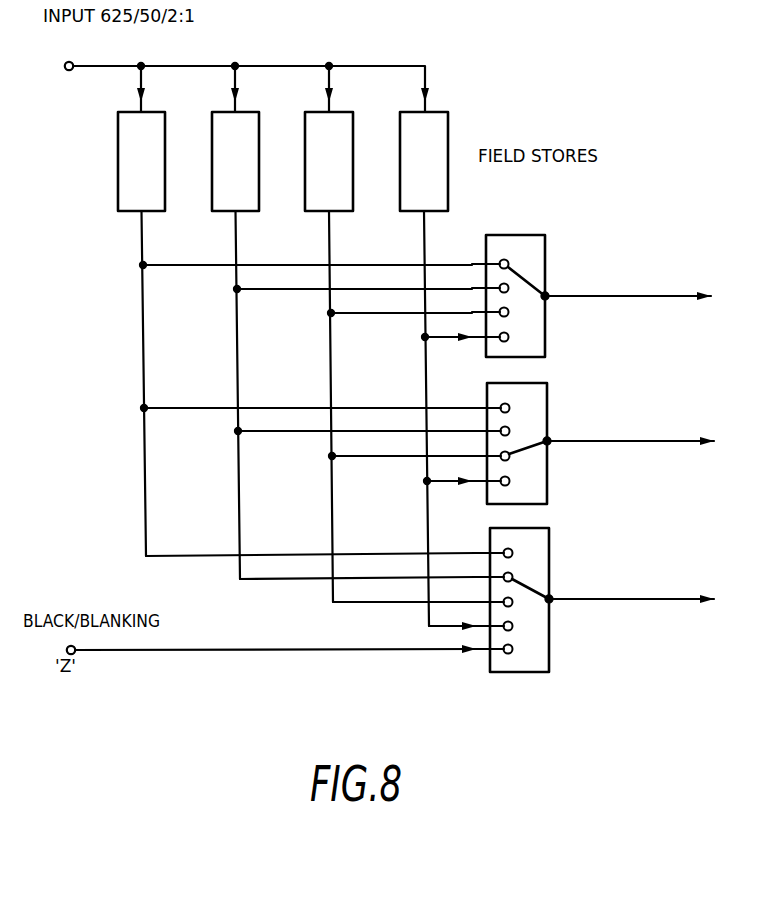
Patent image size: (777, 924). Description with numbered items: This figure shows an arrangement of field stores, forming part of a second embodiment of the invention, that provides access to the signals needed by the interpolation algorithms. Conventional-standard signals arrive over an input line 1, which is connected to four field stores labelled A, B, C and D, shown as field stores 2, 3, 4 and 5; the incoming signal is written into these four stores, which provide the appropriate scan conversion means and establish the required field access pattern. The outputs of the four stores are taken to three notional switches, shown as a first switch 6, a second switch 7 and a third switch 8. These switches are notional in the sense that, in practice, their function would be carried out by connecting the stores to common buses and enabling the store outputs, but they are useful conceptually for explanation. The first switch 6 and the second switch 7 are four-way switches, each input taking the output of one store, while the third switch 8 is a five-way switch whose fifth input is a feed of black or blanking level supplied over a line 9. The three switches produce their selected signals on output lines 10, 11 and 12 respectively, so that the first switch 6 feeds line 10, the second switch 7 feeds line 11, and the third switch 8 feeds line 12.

The input line 1 is at (96, 68).
The field store A 2 is at (118, 211).
The field store B 3 is at (212, 211).
The field store C 4 is at (305, 211).
The field store D 5 is at (400, 211).
The switch S1 6 is at (545, 236).
The switch S2 7 is at (548, 383).
The switch S3 8 is at (550, 528).
The black or blanking level line 9 is at (176, 652).
The output line 10 is at (653, 293).
The output line 11 is at (647, 440).
The output line 12 is at (656, 597).